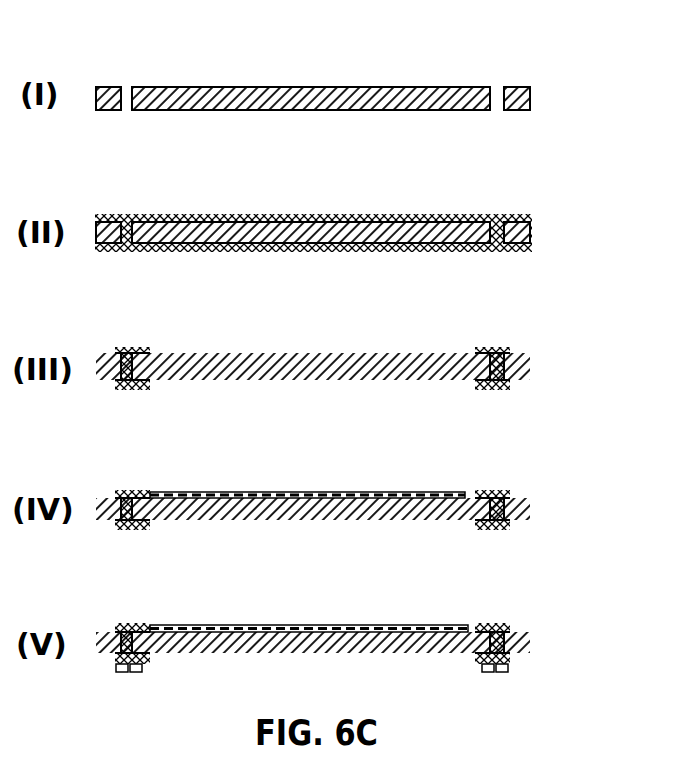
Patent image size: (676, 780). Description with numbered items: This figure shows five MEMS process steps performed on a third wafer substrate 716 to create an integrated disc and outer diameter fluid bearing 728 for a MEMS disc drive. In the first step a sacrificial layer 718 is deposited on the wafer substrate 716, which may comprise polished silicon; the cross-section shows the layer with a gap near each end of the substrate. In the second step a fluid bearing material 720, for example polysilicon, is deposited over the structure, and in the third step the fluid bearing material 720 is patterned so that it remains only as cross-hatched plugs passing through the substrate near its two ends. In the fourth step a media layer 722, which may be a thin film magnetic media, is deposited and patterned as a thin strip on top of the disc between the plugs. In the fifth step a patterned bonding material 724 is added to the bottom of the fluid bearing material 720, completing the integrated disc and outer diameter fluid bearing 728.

The third wafer substrate 716 is at (437, 87).
The sacrificial layer 718 is at (132, 87).
The fluid bearing material 720 is at (497, 214).
The media layer 722 is at (400, 492).
The patterned bonding material 724 is at (312, 682).
The integrated disc and outer diameter fluid bearing 728 is at (350, 625).